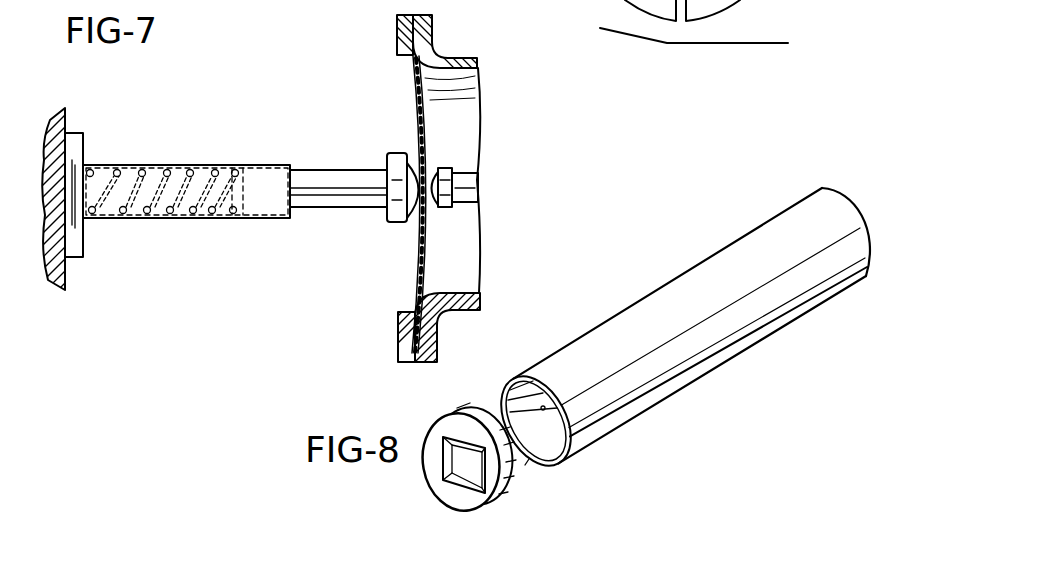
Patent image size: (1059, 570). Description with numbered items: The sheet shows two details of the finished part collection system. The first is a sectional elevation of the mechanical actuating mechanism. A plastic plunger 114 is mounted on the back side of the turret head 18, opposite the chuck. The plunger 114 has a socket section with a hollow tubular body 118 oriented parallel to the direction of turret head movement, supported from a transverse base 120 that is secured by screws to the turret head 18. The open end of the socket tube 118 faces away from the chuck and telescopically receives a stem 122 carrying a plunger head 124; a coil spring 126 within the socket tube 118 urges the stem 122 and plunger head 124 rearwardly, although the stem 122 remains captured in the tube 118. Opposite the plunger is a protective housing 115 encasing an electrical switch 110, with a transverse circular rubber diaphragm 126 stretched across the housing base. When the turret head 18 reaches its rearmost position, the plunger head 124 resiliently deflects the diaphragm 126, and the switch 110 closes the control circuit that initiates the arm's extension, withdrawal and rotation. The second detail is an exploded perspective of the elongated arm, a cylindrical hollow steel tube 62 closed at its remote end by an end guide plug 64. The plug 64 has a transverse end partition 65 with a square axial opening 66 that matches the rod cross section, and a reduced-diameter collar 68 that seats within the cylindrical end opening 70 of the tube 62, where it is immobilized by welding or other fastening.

In FIG. 7, the turret head 18 is at (70, 120).
In FIG. 7, the transverse base 120 is at (83, 242).
In FIG. 7, the hollow tubular body 118 is at (195, 218).
In FIG. 7, the coil spring 126 is at (199, 170).
In FIG. 7, the plunger 114 is at (283, 137).
In FIG. 7, the stem 122 is at (332, 178).
In FIG. 7, the plunger head 124 is at (397, 153).
In FIG. 7, the electrical switch 110 is at (463, 175).
In FIG. 7, the protective housing 115 is at (462, 55).
In FIG. 8, the hollow steel tube 62 is at (700, 282).
In FIG. 8, the cylindrical end opening 70 is at (543, 408).
In FIG. 8, the collar 68 is at (527, 462).
In FIG. 8, the end guide plug 64 is at (454, 467).
In FIG. 8, the transverse end partition 65 is at (450, 500).
In FIG. 8, the axial opening 66 is at (447, 458).